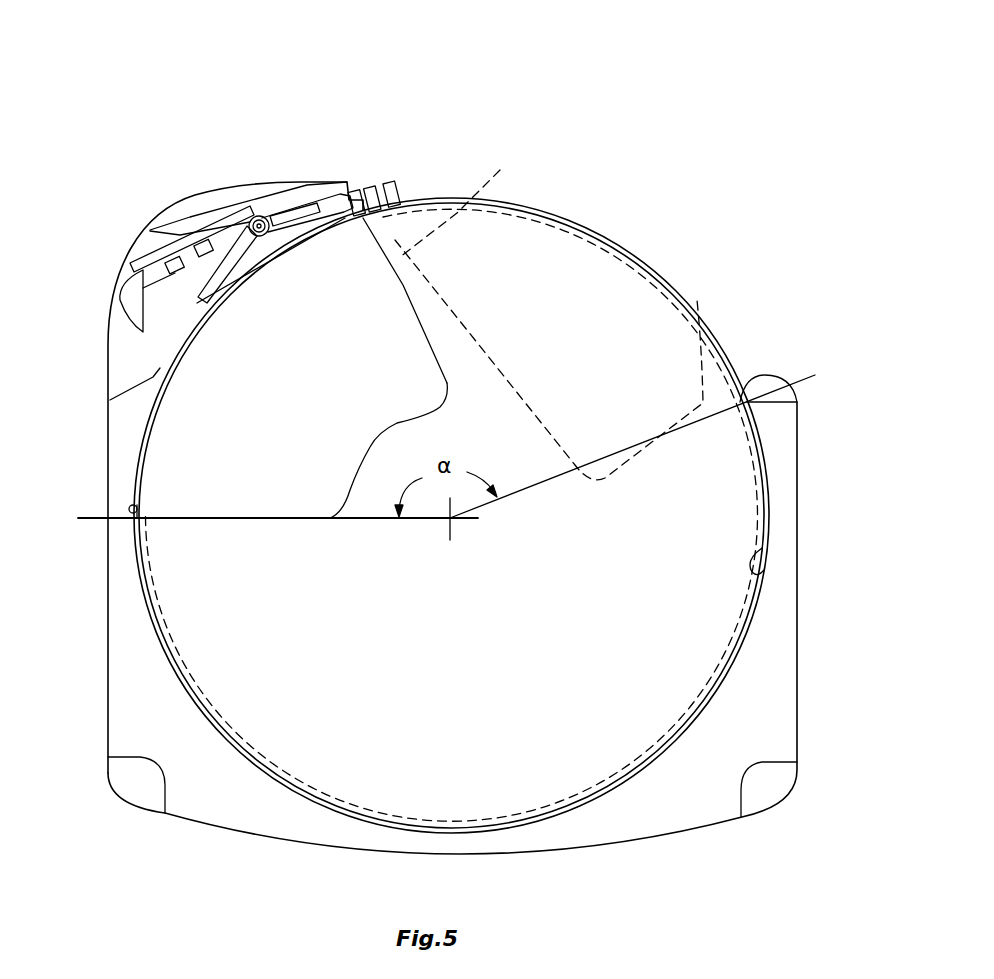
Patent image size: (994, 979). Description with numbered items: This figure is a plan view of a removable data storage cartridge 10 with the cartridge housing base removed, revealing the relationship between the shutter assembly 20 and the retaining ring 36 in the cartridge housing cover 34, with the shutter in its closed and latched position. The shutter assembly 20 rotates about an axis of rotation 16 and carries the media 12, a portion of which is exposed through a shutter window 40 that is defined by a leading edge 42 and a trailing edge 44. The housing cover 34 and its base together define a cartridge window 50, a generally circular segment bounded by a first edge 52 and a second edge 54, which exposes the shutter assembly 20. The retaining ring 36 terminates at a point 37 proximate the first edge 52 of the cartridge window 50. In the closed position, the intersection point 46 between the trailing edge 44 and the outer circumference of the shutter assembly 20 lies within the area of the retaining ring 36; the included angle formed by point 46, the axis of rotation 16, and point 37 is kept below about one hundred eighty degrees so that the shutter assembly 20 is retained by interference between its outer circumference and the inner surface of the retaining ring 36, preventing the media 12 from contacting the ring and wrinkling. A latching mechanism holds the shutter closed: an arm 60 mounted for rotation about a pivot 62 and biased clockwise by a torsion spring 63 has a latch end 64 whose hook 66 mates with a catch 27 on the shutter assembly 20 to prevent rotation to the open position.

The removable data storage cartridge 10 is at (626, 88).
The media 12 is at (165, 437).
The axis of rotation 16 is at (455, 525).
The shutter assembly 20 is at (610, 233).
The catch 27 is at (340, 228).
The cartridge housing cover 34 is at (800, 625).
The retaining ring 36 is at (762, 548).
The point 37 is at (749, 398).
The shutter window 40 is at (338, 467).
The leading edge 42 is at (413, 307).
The trailing edge 44 is at (167, 517).
The intersection point 46 is at (133, 505).
The cartridge window 50 is at (412, 230).
The first edge 52 is at (705, 305).
The second edge 54 is at (461, 200).
The arm 60 is at (148, 255).
The pivot 62 is at (252, 218).
The torsion spring 63 is at (213, 233).
The latch end 64 is at (362, 188).
The hook 66 is at (330, 192).